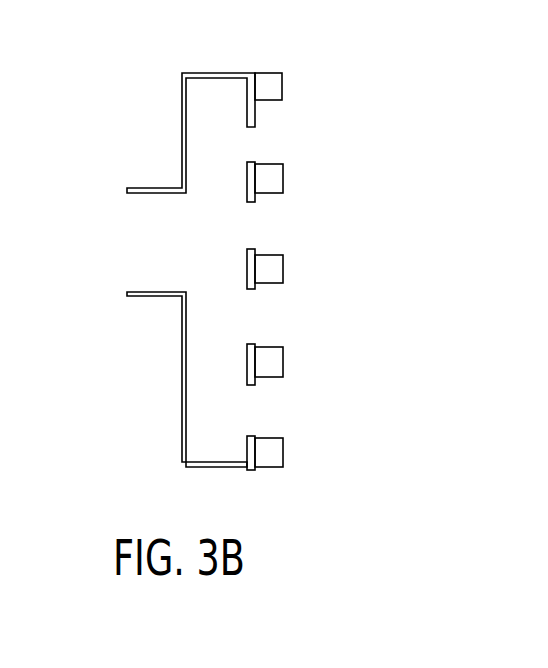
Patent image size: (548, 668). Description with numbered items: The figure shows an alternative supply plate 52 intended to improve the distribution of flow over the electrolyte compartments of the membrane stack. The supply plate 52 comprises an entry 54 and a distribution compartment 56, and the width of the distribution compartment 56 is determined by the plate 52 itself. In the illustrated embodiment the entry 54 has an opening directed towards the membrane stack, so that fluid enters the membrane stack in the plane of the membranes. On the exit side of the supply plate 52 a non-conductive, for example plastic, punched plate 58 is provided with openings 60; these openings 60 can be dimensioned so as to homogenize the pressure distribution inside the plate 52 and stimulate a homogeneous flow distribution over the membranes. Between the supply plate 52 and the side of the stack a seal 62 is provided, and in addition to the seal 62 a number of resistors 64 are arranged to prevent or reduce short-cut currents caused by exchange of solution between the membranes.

The supply plate 52 is at (327, 118).
The entry 54 is at (150, 237).
The distribution compartment 56 is at (205, 146).
The punched plate 58 is at (253, 380).
The openings 60 is at (250, 316).
The seal 62 is at (268, 78).
The resistors 64 is at (265, 269).